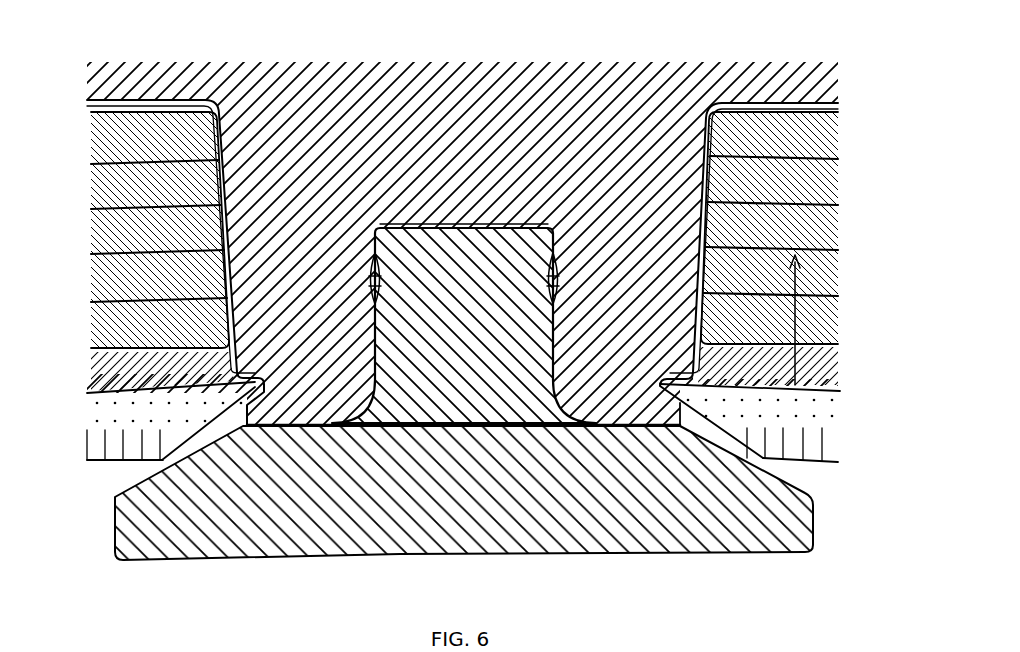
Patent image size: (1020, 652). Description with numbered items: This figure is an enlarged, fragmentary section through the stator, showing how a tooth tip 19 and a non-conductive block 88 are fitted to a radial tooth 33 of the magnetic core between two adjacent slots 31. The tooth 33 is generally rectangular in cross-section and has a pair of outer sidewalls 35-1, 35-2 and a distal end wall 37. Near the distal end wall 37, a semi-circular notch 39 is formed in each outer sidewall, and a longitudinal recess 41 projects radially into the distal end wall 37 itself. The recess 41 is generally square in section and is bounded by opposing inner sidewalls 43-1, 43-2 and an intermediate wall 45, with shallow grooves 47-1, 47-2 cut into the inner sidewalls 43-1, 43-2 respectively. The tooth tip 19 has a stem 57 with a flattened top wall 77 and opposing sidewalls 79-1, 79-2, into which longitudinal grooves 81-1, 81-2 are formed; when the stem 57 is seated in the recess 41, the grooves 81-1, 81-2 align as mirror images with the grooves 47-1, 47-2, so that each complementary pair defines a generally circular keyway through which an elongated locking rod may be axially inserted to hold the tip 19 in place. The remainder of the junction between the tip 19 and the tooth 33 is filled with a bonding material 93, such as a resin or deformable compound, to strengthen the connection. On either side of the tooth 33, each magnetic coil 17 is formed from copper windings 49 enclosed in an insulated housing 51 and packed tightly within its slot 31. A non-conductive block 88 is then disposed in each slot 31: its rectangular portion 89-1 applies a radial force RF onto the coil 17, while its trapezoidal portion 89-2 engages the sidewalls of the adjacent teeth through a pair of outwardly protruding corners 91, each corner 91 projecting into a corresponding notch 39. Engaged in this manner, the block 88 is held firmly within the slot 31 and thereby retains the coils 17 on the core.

The magnetic coil 17 is at (797, 97).
The tooth tip 19 is at (563, 555).
The slot 31 is at (790, 470).
The tooth 33 is at (575, 120).
The outer sidewall 35-1 is at (243, 183).
The outer sidewall 35-2 is at (695, 178).
The distal end wall 37 is at (770, 553).
The semi-circular notch 39 is at (370, 333).
The longitudinal recess 41 is at (553, 228).
The inner sidewall 43-1 is at (245, 385).
The inner sidewall 43-2 is at (575, 372).
The intermediate wall 45 is at (403, 228).
The shallow groove 47-1 is at (370, 292).
The shallow groove 47-2 is at (556, 266).
The copper windings 49 is at (76, 237).
The insulated housing 51 is at (87, 103).
The stem 57 is at (470, 278).
The flattened top wall 77 is at (432, 228).
The sidewall 79-1 is at (378, 345).
The sidewall 79-2 is at (553, 310).
The longitudinal groove 81-1 is at (368, 268).
The longitudinal groove 81-2 is at (556, 257).
The non-conductive block 88 is at (87, 426).
The rectangular portion 89-1 is at (822, 375).
The trapezoidal portion 89-2 is at (827, 425).
The corner 91 is at (247, 395).
The bonding material 93 is at (378, 226).
The radial force RF is at (793, 327).